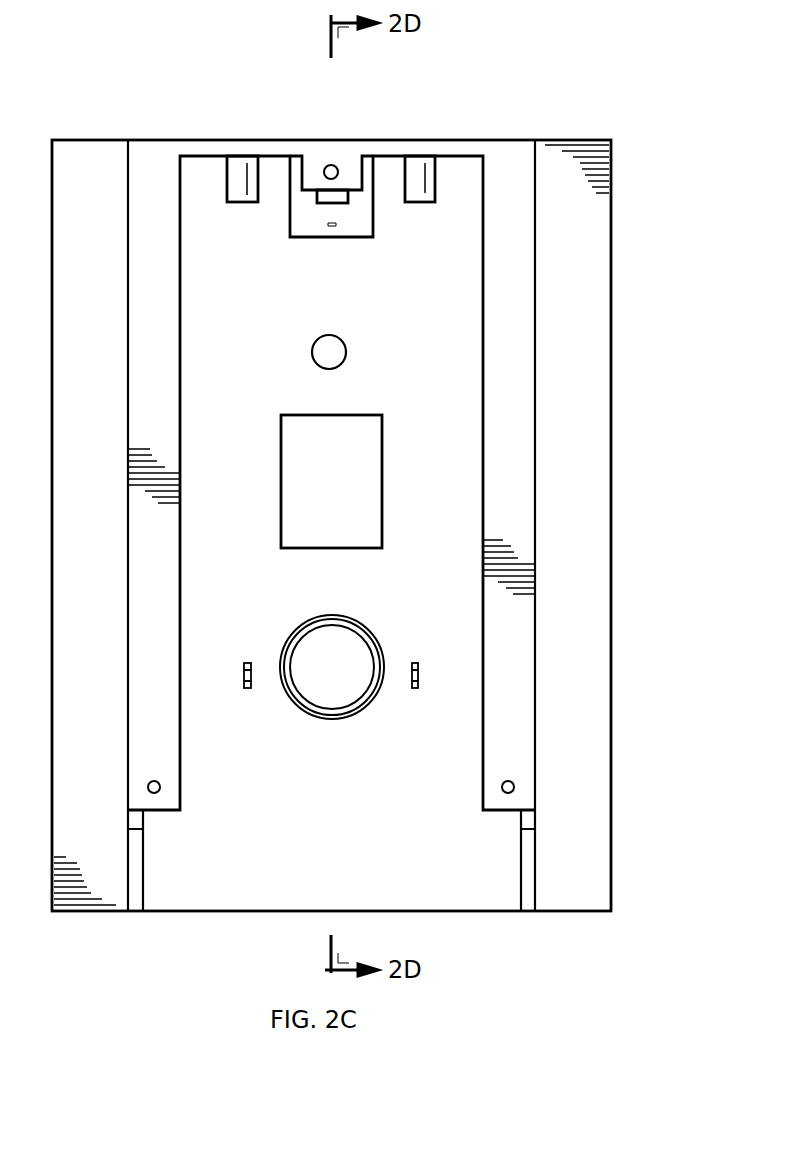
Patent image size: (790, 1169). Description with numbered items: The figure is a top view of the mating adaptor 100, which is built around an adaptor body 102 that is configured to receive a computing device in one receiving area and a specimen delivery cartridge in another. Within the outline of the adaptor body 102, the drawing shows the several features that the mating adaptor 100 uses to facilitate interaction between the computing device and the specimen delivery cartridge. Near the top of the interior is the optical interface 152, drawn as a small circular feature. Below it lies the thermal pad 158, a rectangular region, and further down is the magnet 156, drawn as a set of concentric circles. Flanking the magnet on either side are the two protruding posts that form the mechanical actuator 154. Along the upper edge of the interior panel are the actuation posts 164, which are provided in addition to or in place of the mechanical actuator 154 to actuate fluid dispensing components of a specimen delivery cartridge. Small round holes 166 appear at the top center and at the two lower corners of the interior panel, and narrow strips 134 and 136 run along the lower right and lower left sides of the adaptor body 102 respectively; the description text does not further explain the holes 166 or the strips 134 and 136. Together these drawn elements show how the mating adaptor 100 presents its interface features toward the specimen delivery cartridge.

The mating adaptor 100 is at (150, 103).
The adaptor body 102 is at (600, 527).
The side member 134 is at (518, 858).
The side member 136 is at (143, 858).
The optical interface 152 is at (333, 338).
The mechanical actuator 154 is at (247, 660).
The magnet 156 is at (333, 698).
The thermal pad 158 is at (290, 478).
The actuation post 164 is at (243, 203).
The mounting hole 166 is at (329, 164).